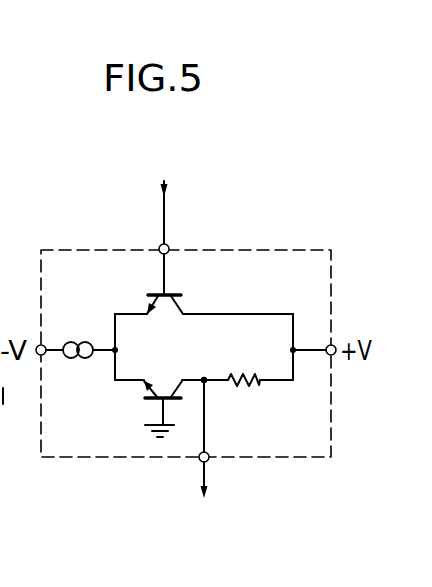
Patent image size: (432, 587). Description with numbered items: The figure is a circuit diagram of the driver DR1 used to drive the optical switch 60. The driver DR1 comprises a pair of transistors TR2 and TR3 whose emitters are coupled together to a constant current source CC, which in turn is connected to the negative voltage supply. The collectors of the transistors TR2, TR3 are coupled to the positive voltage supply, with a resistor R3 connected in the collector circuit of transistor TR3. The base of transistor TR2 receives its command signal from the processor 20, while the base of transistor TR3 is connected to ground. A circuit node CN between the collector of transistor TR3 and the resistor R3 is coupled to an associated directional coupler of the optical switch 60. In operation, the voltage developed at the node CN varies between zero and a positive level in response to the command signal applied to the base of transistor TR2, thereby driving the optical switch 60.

The processor 20 is at (206, 197).
The driver DR1 is at (278, 241).
The transistor TR2 is at (149, 294).
The transistor TR3 is at (147, 400).
The constant current source CC is at (91, 337).
The resistor R3 is at (244, 370).
The circuit node CN is at (207, 383).
The optical switch 60 is at (222, 500).